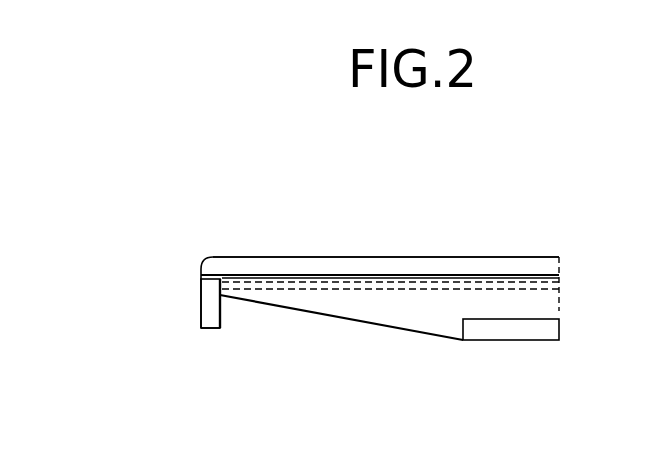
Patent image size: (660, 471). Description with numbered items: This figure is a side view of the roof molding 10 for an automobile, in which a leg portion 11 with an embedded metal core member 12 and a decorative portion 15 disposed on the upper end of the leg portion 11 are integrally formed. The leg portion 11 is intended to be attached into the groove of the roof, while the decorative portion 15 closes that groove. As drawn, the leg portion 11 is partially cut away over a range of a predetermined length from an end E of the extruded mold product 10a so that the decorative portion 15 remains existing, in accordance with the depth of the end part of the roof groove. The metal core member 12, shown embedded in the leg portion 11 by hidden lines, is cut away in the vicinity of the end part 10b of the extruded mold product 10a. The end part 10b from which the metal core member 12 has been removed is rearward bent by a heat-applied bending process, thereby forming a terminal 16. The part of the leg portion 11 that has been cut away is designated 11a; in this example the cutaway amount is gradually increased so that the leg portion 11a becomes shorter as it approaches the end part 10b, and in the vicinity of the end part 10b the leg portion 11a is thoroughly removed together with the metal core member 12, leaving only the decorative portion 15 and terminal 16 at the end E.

The roof molding 10 is at (536, 251).
The extruded mold product 10a is at (391, 257).
The end part 10b is at (200, 302).
The leg portion 11 is at (560, 316).
The cut-away part of the leg portion 11a is at (357, 316).
The metal core member 12 is at (561, 282).
The decorative portion 15 is at (464, 257).
The terminal 16 is at (322, 257).
The end E is at (210, 331).